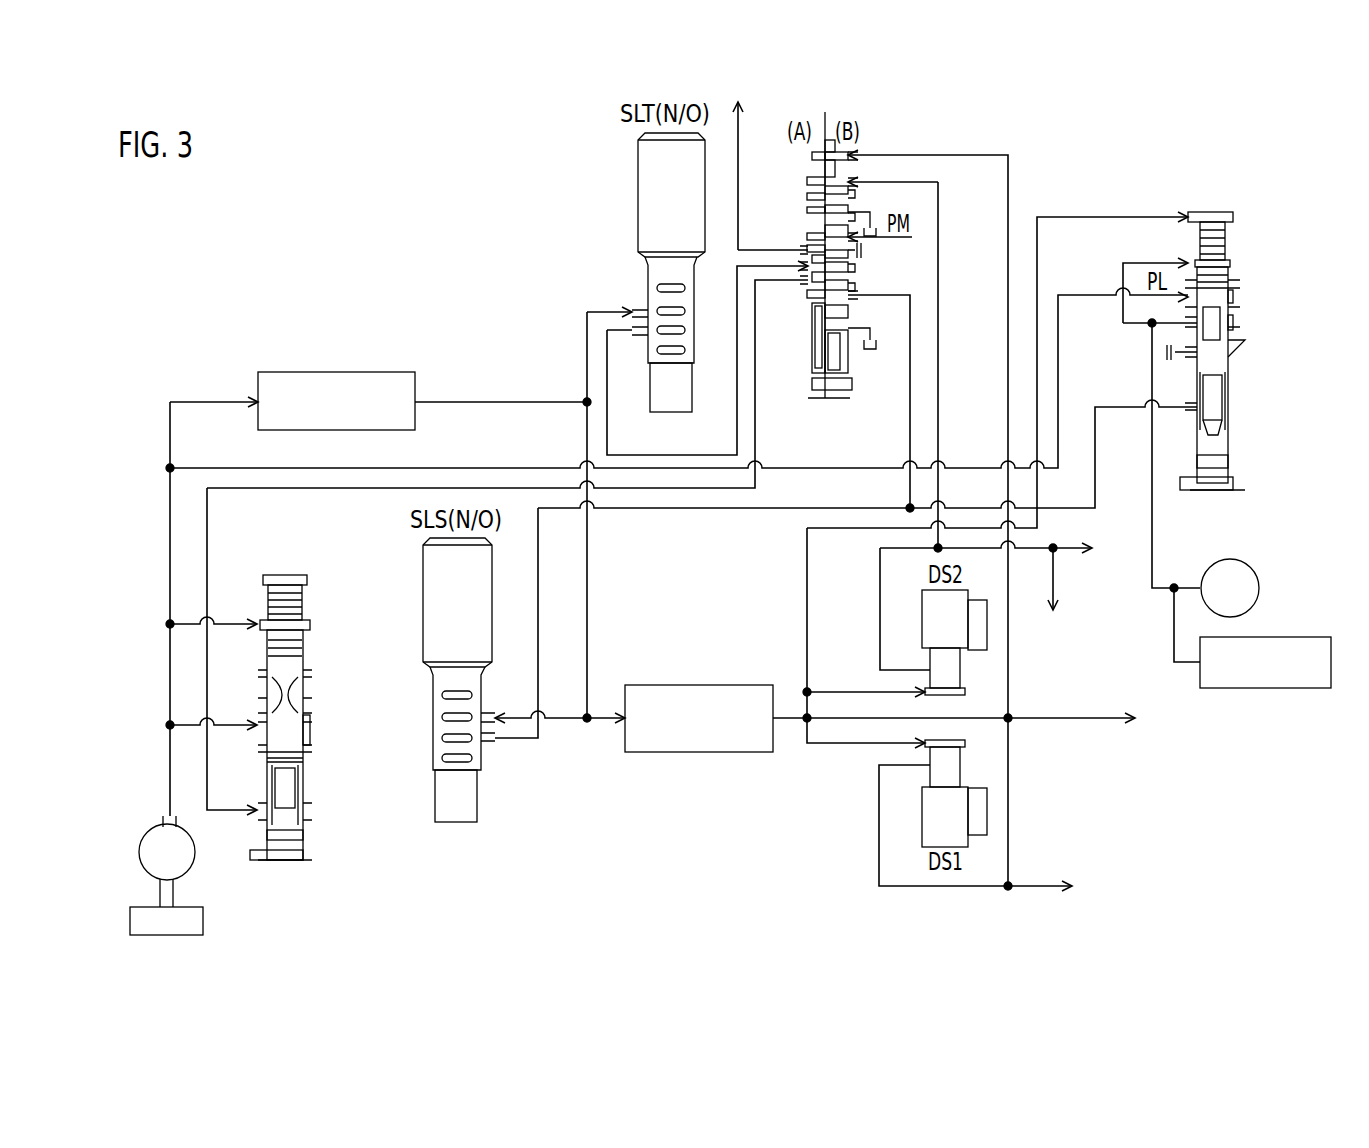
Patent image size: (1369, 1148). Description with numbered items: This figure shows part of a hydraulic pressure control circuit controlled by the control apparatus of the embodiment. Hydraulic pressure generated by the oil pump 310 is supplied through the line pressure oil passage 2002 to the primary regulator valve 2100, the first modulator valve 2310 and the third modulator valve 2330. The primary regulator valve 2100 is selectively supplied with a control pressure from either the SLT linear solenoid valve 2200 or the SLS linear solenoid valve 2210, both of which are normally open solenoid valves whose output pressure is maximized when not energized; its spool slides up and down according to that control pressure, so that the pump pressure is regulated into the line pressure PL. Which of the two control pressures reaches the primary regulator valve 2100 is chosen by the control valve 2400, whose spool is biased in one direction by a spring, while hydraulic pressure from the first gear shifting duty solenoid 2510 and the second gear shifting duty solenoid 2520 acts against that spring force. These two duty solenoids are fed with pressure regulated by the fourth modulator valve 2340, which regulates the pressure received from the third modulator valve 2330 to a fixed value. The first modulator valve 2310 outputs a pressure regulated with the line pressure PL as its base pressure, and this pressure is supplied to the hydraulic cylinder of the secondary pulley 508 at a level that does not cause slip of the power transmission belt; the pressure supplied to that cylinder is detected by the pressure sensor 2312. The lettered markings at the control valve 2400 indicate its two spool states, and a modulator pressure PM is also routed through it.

The line pressure oil passage 2002 is at (168, 566).
The oil pump 310 is at (147, 840).
The primary regulator valve 2100 is at (312, 722).
The SLT linear solenoid valve 2200 is at (638, 190).
The SLS linear solenoid valve 2210 is at (423, 592).
The modulator valve (1) 2310 is at (1220, 212).
The pressure sensor 2312 is at (1292, 689).
The modulator valve (3) 2330 is at (332, 372).
The modulator valve (4) 2340 is at (700, 752).
The control valve 2400 is at (817, 400).
The duty solenoid (1) for gear shifting control 2510 is at (937, 740).
The duty solenoid (2) for gear shifting control 2520 is at (961, 670).
The secondary pulley 508 is at (1246, 564).